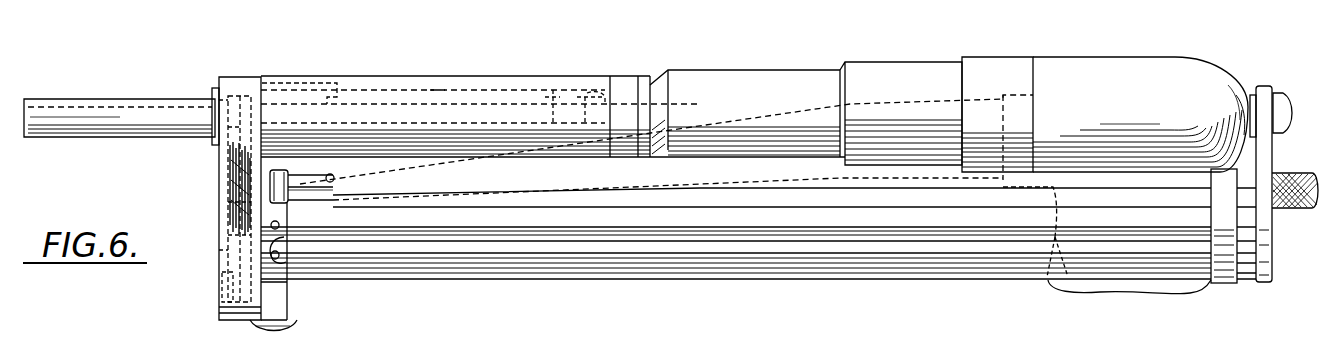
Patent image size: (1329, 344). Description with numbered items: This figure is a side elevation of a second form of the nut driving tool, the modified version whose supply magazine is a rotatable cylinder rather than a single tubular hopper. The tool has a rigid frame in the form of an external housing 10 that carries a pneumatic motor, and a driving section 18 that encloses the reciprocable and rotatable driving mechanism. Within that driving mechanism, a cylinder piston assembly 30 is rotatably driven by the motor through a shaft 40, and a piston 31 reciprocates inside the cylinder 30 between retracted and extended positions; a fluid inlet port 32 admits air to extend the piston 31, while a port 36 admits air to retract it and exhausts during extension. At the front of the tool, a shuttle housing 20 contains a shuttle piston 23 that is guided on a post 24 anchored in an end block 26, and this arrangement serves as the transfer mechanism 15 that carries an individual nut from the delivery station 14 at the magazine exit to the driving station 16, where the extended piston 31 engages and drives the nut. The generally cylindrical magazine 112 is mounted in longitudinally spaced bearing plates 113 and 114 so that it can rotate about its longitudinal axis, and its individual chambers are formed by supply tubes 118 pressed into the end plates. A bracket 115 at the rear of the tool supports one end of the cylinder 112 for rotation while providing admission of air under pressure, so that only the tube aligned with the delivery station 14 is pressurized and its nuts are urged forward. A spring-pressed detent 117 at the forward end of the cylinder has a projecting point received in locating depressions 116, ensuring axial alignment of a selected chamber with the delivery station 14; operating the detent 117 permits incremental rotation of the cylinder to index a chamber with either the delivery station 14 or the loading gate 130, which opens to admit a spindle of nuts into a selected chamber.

The external housing 10 is at (1030, 57).
The delivery station 14 is at (219, 192).
The transfer mechanism 15 is at (217, 258).
The driving station 16 is at (221, 116).
The driving section 18 is at (457, 77).
The shuttle housing 20 is at (216, 162).
The shuttle piston 23 is at (230, 202).
The post 24 is at (218, 278).
The end block 26 is at (219, 313).
The cylinder piston assembly 30 is at (438, 90).
The piston 31 is at (518, 103).
The fluid inlet port 32 is at (555, 97).
The port 36 is at (307, 80).
The shaft 40 is at (697, 103).
The cylindrical magazine 112 is at (666, 282).
The bearing plate 113 is at (288, 243).
The bearing plate 114 is at (1222, 285).
The bracket 115 is at (1272, 255).
The locating depressions 116 is at (280, 225).
The spring-pressed detent 117 is at (297, 322).
The supply tubes 118 is at (877, 197).
The loading gate 130 is at (1292, 173).